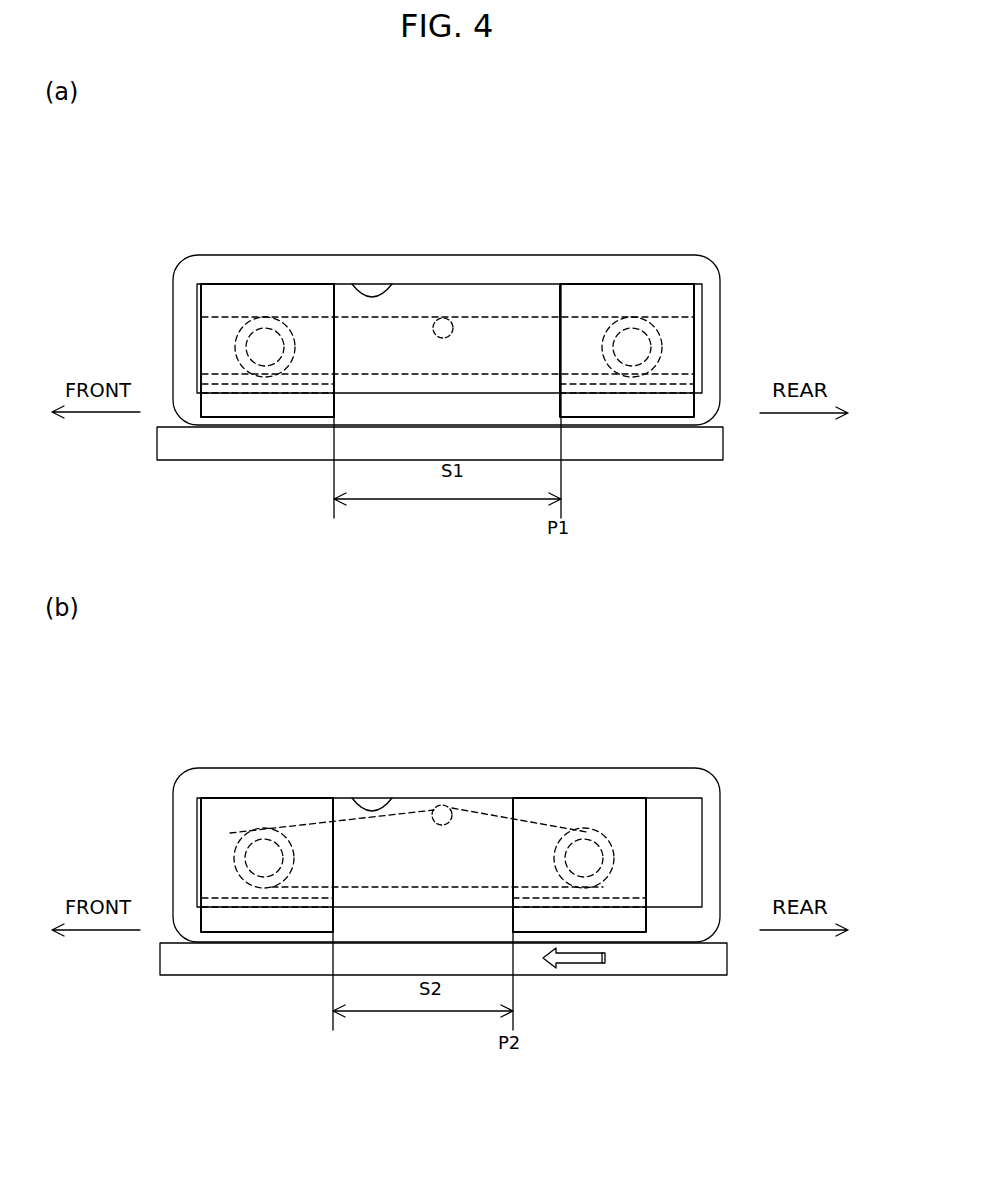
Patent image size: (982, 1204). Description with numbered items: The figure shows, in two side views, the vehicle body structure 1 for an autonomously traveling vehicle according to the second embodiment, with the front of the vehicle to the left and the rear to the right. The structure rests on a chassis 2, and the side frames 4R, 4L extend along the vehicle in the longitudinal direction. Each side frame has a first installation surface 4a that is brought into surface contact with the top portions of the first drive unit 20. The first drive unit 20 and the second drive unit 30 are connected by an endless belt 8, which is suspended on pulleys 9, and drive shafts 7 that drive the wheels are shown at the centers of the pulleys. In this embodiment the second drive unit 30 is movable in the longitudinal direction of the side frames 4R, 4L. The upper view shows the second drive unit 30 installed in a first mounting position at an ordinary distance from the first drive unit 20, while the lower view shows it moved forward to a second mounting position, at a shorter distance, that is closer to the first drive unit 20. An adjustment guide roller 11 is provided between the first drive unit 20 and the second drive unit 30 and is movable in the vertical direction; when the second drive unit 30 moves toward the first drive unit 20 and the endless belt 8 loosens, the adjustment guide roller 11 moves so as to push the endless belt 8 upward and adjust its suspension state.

The vehicle body structure 1 is at (764, 268).
The chassis 2 is at (643, 448).
The side frame 4L is at (473, 522).
The side frame 4R is at (563, 268).
The first installation surface 4a is at (352, 284).
The drive shaft 7 is at (265, 348).
The endless belt 8 is at (505, 316).
The pulley 9 is at (262, 318).
The adjustment guide roller 11 is at (443, 318).
The first drive unit 20 is at (226, 290).
The second drive unit 30 is at (671, 303).